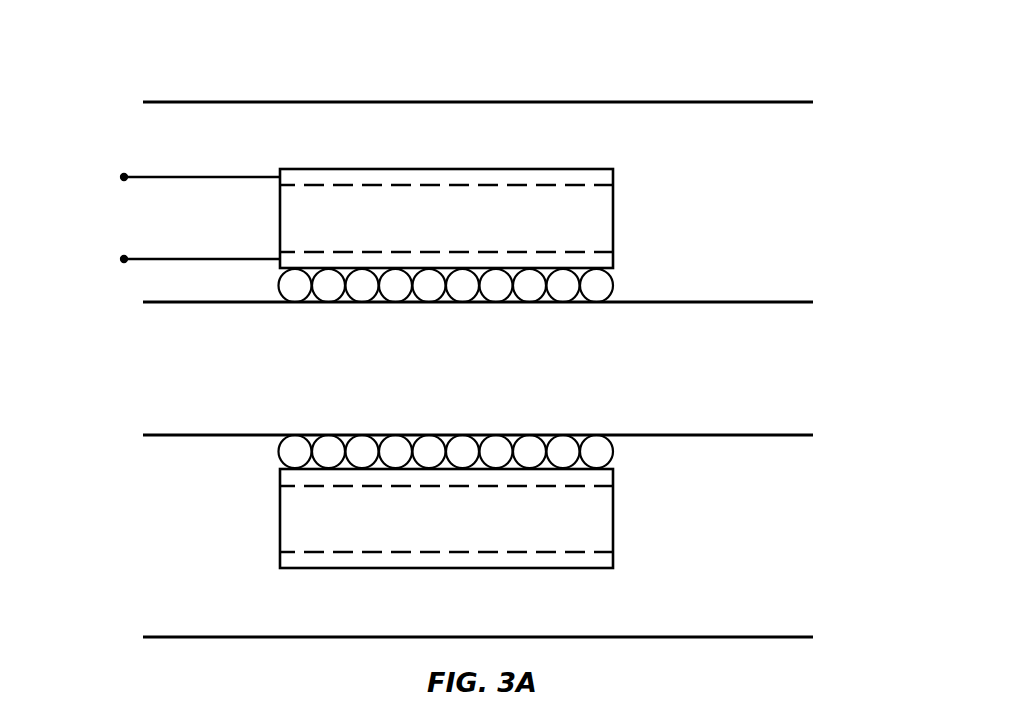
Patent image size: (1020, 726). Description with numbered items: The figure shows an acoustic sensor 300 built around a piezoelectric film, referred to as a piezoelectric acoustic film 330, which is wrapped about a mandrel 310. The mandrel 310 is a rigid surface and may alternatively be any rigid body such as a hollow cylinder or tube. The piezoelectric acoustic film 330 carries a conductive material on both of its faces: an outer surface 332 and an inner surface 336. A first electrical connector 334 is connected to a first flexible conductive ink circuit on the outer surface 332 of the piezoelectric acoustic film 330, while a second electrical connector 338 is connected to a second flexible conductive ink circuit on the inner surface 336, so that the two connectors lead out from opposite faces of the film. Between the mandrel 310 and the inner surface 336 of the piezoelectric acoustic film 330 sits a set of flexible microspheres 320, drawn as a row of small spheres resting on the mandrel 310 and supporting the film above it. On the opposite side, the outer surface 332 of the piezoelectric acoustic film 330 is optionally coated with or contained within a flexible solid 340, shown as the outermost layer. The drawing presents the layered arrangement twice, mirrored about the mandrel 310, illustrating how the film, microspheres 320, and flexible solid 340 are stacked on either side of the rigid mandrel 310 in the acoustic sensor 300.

The acoustic sensor 300 is at (164, 72).
The mandrel 310 is at (748, 302).
The flexible microspheres 320 is at (256, 284).
The piezoelectric acoustic film 330 is at (613, 215).
The outer surface 332 is at (613, 173).
The first electrical connector 334 is at (172, 177).
The inner surface 336 is at (613, 258).
The second electrical connector 338 is at (172, 259).
The flexible solid 340 is at (748, 102).